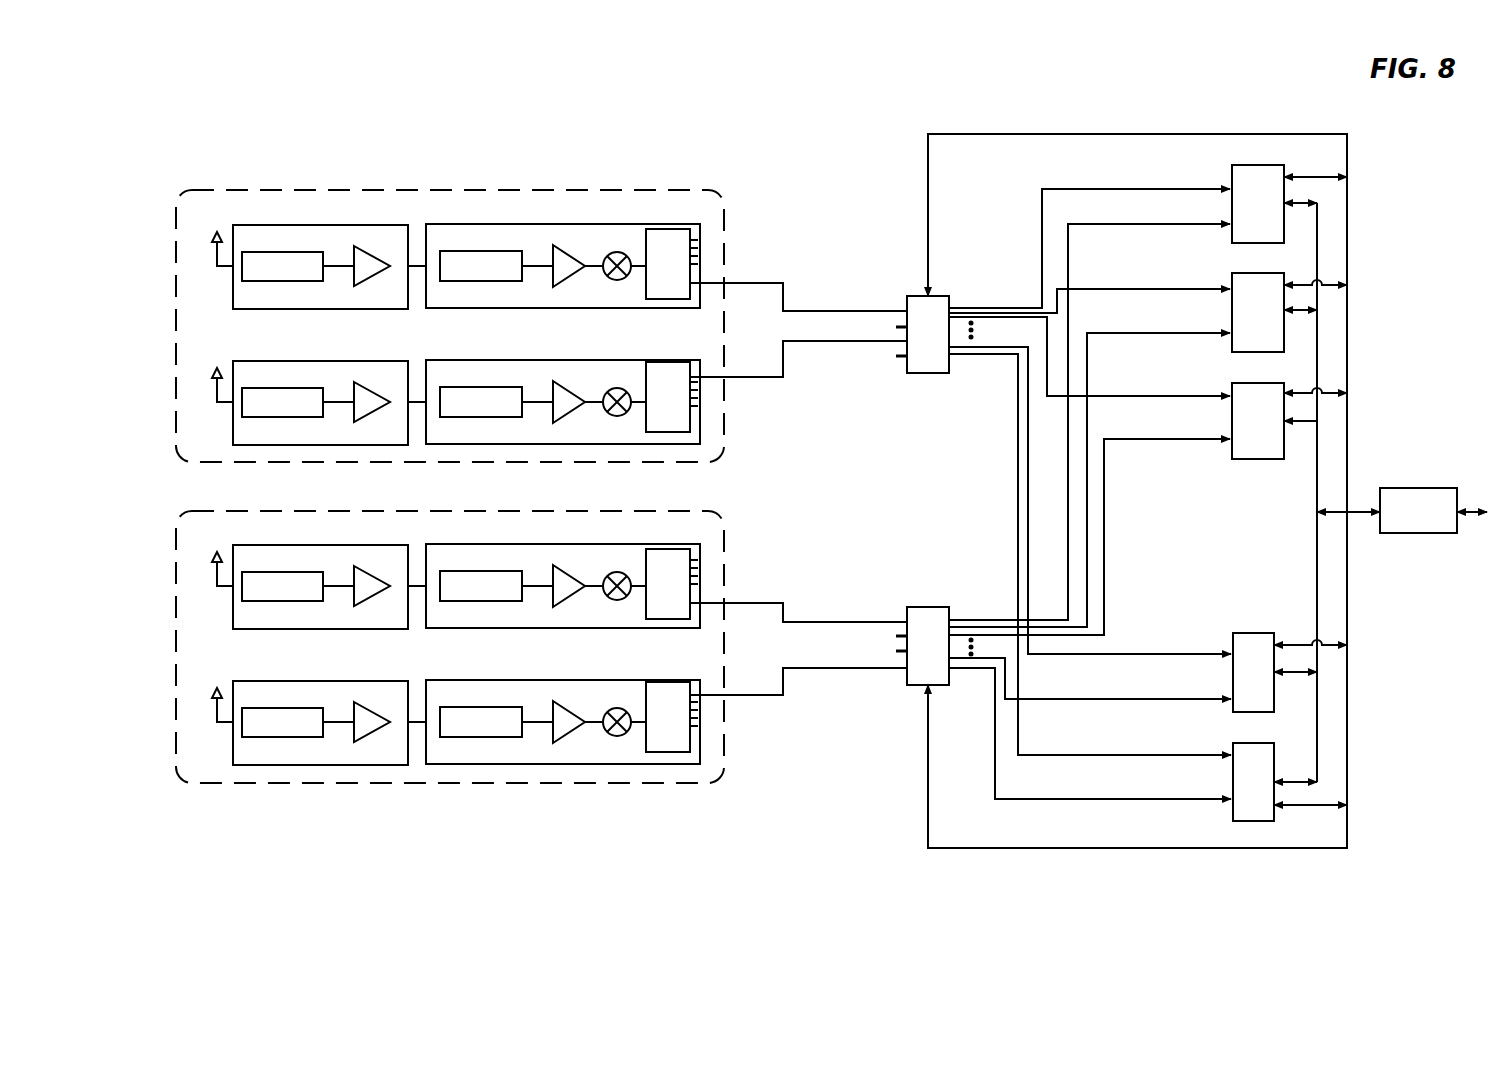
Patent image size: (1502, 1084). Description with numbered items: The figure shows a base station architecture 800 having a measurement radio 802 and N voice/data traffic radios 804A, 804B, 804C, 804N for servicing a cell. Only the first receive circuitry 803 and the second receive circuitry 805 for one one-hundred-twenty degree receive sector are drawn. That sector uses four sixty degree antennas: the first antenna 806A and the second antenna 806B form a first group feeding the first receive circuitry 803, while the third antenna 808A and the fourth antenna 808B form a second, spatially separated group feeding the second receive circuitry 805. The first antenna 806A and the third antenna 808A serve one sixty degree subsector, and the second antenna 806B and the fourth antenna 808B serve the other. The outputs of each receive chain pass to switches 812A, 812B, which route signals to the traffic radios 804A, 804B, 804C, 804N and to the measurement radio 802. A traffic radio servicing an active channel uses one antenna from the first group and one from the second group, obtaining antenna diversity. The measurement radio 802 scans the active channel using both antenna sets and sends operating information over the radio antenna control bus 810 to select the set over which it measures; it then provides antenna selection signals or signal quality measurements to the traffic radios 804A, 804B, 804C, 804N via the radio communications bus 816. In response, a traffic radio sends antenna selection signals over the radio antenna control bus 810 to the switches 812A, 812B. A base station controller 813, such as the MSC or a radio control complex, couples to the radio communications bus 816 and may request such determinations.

The base station architecture 800 is at (382, 134).
The receive circuitry RX0 803 is at (467, 301).
The receive circuitry RX1 805 is at (469, 616).
The antenna A1 806A is at (212, 240).
The antenna A2 806B is at (212, 374).
The antenna B1 808A is at (212, 560).
The antenna B2 808B is at (212, 694).
The switch 812A is at (935, 296).
The switch 812B is at (930, 607).
The traffic radio 804A is at (1232, 181).
The traffic radio 804B is at (1232, 287).
The traffic radio 804C is at (1232, 391).
The traffic radio 804N is at (1233, 648).
The measurement radio 802 is at (1233, 756).
The radio communications bus 816 is at (1317, 336).
The base station controller 813 is at (1393, 488).
The radio antenna control bus 810 is at (1348, 722).